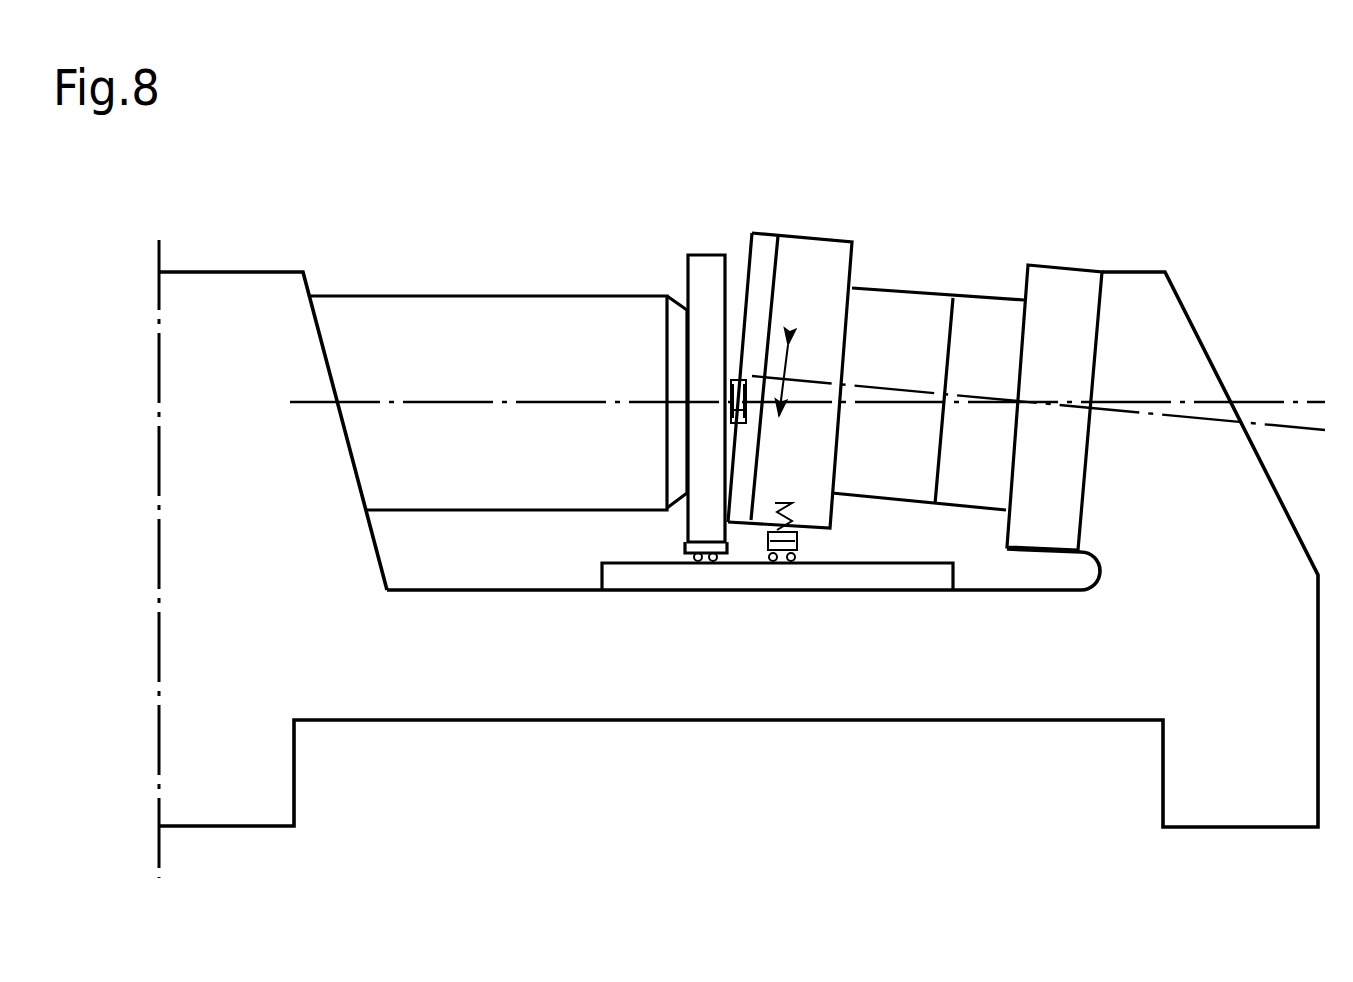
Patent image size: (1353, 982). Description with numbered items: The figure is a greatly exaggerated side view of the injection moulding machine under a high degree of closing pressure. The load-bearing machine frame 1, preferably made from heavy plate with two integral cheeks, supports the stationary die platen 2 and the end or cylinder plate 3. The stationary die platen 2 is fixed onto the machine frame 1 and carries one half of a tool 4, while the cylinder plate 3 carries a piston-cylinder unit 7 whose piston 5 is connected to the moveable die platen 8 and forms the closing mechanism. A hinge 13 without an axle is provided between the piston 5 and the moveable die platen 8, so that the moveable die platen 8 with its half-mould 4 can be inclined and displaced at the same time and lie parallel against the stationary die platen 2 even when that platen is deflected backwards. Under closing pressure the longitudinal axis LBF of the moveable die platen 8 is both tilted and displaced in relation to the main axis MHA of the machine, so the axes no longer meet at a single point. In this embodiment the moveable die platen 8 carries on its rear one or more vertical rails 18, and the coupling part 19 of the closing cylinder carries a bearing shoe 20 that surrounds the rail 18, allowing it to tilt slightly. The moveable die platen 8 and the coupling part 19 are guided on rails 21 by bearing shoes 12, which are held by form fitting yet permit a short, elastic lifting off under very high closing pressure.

The machine frame 1 is at (1002, 683).
The stationary die platen 2 is at (1057, 300).
The end or cylinder plate 3 is at (222, 337).
The tool half 4 is at (978, 347).
The piston 5 is at (497, 325).
The piston-cylinder unit 7 is at (400, 280).
The moveable die platen 8 is at (823, 272).
The bearing shoes 12 is at (787, 562).
The hinge without an axle 13 is at (723, 440).
The vertical rail 18 is at (762, 250).
The coupling part 19 is at (707, 277).
The bearing shoe 20 is at (731, 410).
The rails 21 is at (838, 575).
The main axis of the machine MHA is at (522, 400).
The longitudinal axis of the moveable die platen LBF is at (867, 382).